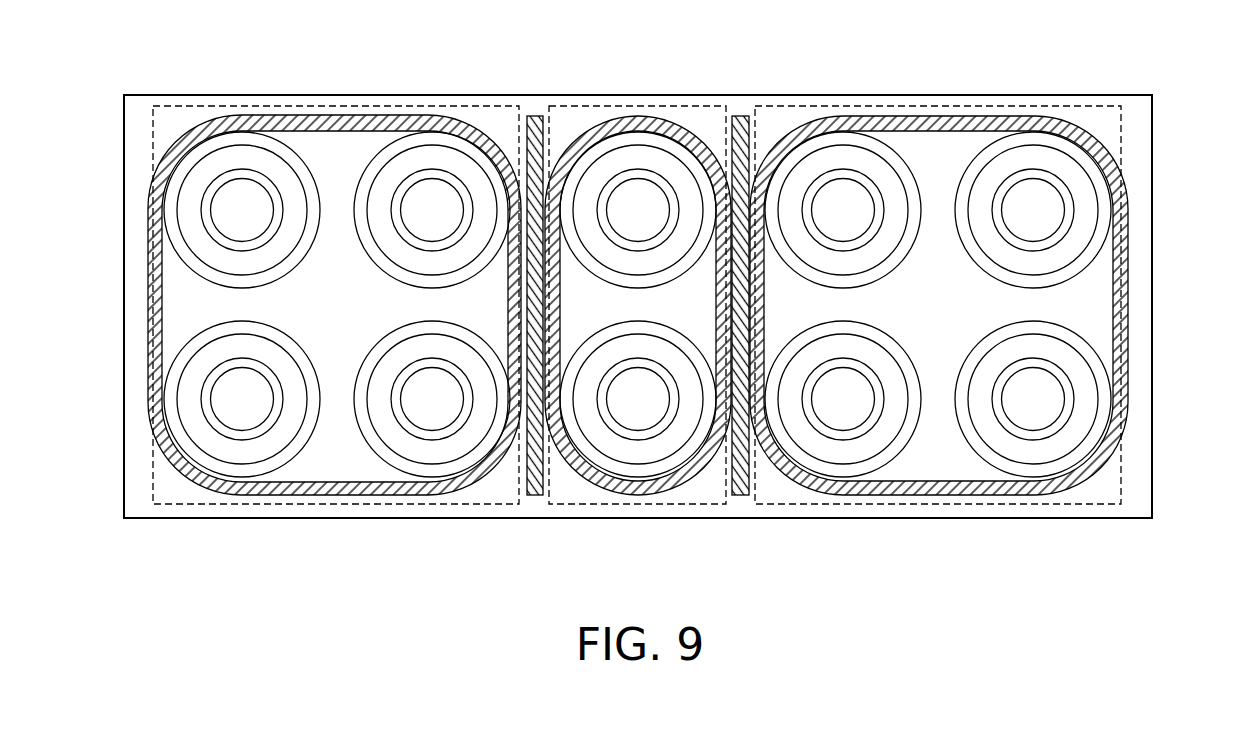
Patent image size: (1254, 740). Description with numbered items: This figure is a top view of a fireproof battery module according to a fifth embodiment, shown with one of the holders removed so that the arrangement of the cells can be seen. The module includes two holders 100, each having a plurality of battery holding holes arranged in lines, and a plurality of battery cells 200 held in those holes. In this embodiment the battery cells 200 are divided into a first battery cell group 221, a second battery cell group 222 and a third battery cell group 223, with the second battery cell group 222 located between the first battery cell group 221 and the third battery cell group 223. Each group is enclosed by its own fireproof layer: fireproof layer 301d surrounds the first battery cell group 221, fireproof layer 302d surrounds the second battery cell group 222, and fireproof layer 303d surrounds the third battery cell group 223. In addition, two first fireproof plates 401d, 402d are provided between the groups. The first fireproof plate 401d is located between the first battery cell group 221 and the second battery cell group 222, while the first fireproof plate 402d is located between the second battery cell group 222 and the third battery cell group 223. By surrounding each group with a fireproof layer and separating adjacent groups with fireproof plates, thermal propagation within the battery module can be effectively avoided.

The holder 100 is at (1137, 114).
The battery cell 200 is at (241, 210).
The first battery cell group 221 is at (332, 106).
The second battery cell group 222 is at (586, 106).
The third battery cell group 223 is at (934, 106).
The fireproof layer 301d is at (308, 487).
The fireproof layer 302d is at (688, 473).
The fireproof layer 303d is at (953, 487).
The first fireproof plate 401d is at (537, 483).
The first fireproof plate 402d is at (742, 480).